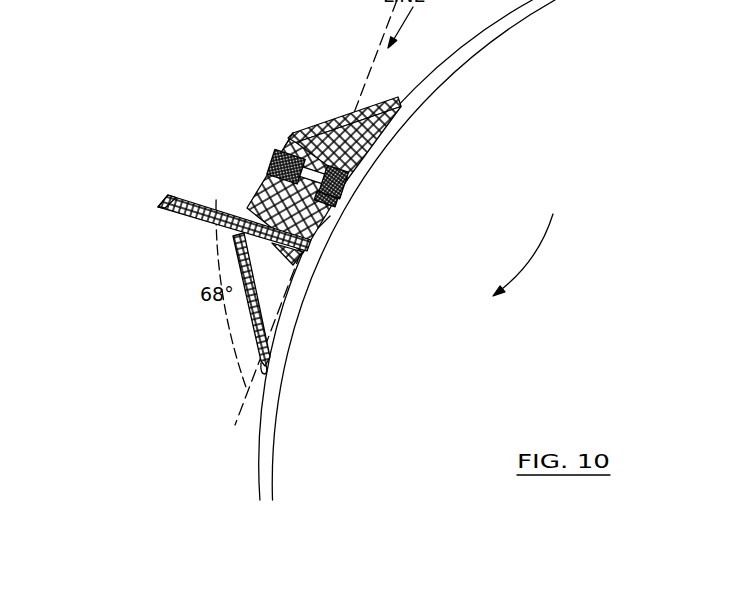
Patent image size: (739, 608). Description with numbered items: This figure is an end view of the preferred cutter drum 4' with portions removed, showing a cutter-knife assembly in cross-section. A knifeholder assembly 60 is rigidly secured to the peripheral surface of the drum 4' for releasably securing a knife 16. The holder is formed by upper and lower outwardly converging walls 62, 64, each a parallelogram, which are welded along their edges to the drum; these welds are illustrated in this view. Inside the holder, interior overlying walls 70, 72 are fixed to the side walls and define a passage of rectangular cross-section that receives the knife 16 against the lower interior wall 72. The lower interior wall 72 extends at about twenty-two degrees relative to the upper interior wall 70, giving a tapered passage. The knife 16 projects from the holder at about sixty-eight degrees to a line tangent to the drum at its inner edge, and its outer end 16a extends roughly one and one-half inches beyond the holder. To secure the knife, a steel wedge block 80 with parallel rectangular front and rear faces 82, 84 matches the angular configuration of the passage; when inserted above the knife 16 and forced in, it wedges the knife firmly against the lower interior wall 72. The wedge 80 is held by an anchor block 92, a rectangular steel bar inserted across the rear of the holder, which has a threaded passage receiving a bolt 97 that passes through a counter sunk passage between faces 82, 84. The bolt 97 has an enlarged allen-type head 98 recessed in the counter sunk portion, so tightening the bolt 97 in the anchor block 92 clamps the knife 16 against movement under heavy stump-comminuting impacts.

The cutter drum 4' is at (361, 250).
The knife 16 is at (185, 207).
The blade tip 16a is at (160, 197).
The knifeholder assembly 60 is at (210, 256).
The upper wall 62 is at (338, 117).
The lower wall 64 is at (250, 308).
The upper interior wall 70 is at (345, 135).
The lower interior wall 72 is at (292, 252).
The wedge block 80 is at (258, 195).
The front face 82 is at (240, 140).
The rear face 84 is at (325, 225).
The anchor block 92 is at (342, 230).
The bolt 97 is at (358, 198).
The head 98 is at (285, 143).